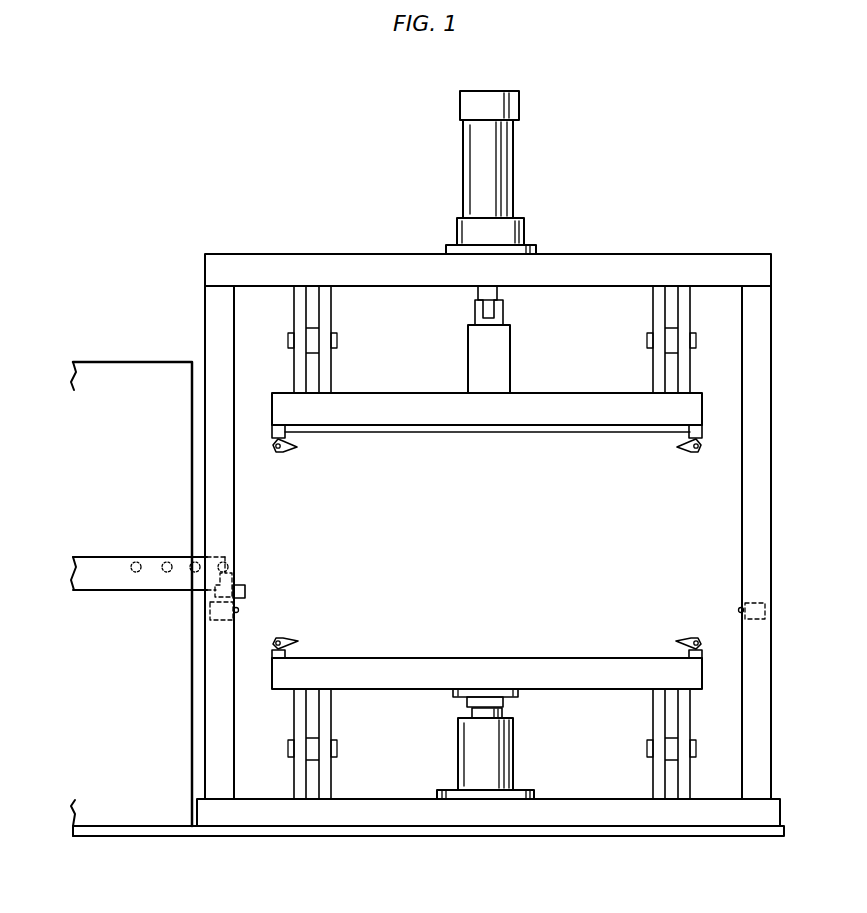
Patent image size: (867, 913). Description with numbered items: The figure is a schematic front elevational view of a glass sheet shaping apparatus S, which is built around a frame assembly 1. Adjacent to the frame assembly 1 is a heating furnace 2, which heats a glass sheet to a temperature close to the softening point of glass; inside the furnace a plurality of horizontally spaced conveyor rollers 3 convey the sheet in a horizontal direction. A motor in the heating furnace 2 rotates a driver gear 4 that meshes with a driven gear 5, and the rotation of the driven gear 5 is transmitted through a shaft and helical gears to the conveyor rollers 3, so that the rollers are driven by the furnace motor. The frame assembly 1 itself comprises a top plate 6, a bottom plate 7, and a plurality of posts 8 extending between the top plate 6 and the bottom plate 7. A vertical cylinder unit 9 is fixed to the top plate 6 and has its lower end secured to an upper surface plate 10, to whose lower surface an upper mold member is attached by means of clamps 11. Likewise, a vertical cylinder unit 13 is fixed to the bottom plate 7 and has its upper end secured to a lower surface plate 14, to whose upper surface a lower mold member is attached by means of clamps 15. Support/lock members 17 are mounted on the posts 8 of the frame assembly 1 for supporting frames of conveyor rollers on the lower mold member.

The glass sheet shaping apparatus S is at (661, 170).
The frame assembly 1 is at (227, 253).
The heating furnace 2 is at (112, 366).
The conveyor rollers 3 is at (133, 561).
The driver gear 4 is at (247, 592).
The driven gear 5 is at (229, 582).
The top plate 6 is at (363, 265).
The bottom plate 7 is at (387, 817).
The posts 8 is at (213, 318).
The vertical cylinder unit 9 is at (500, 175).
The upper surface plate 10 is at (540, 422).
The clamps 11 is at (285, 453).
The vertical cylinder unit 13 is at (500, 765).
The lower surface plate 14 is at (515, 657).
The clamps 15 is at (293, 648).
The support/lock members 17 is at (215, 616).